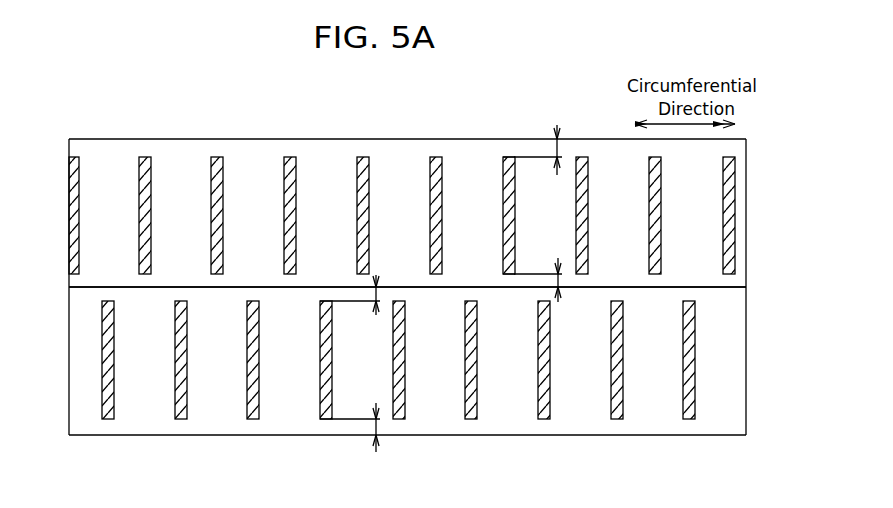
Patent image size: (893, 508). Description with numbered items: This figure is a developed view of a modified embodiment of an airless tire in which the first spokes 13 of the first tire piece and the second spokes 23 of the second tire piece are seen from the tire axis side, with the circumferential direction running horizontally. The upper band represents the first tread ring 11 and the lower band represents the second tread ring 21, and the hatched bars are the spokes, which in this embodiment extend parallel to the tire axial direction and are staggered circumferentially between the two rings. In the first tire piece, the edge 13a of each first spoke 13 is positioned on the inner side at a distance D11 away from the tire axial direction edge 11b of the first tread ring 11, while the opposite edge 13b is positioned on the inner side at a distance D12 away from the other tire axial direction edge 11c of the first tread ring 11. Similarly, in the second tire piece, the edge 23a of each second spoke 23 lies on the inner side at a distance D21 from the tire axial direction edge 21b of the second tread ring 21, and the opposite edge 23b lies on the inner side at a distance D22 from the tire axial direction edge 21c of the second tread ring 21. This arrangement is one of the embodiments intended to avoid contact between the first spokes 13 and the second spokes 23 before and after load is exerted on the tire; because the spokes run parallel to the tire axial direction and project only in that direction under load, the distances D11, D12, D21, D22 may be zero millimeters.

The first tread ring 11 is at (402, 168).
The tire axial direction edge of the first tread ring 11b is at (186, 139).
The tire axial direction edge of the first tread ring 11c is at (712, 288).
The first spokes 13 is at (505, 193).
The edge of the first spoke 13a is at (506, 157).
The edge of the first spoke 13b is at (510, 274).
The second tread ring 21 is at (576, 410).
The tire axial direction edge of the second tread ring 21b is at (185, 436).
The tire axial direction edge of the second tread ring 21c is at (682, 287).
The second spokes 23 is at (320, 371).
The edge of the second spoke 23a is at (323, 419).
The edge of the second spoke 23b is at (327, 301).
The distance D11 is at (552, 150).
The distance D12 is at (553, 280).
The distance D21 is at (371, 427).
The distance D22 is at (371, 295).